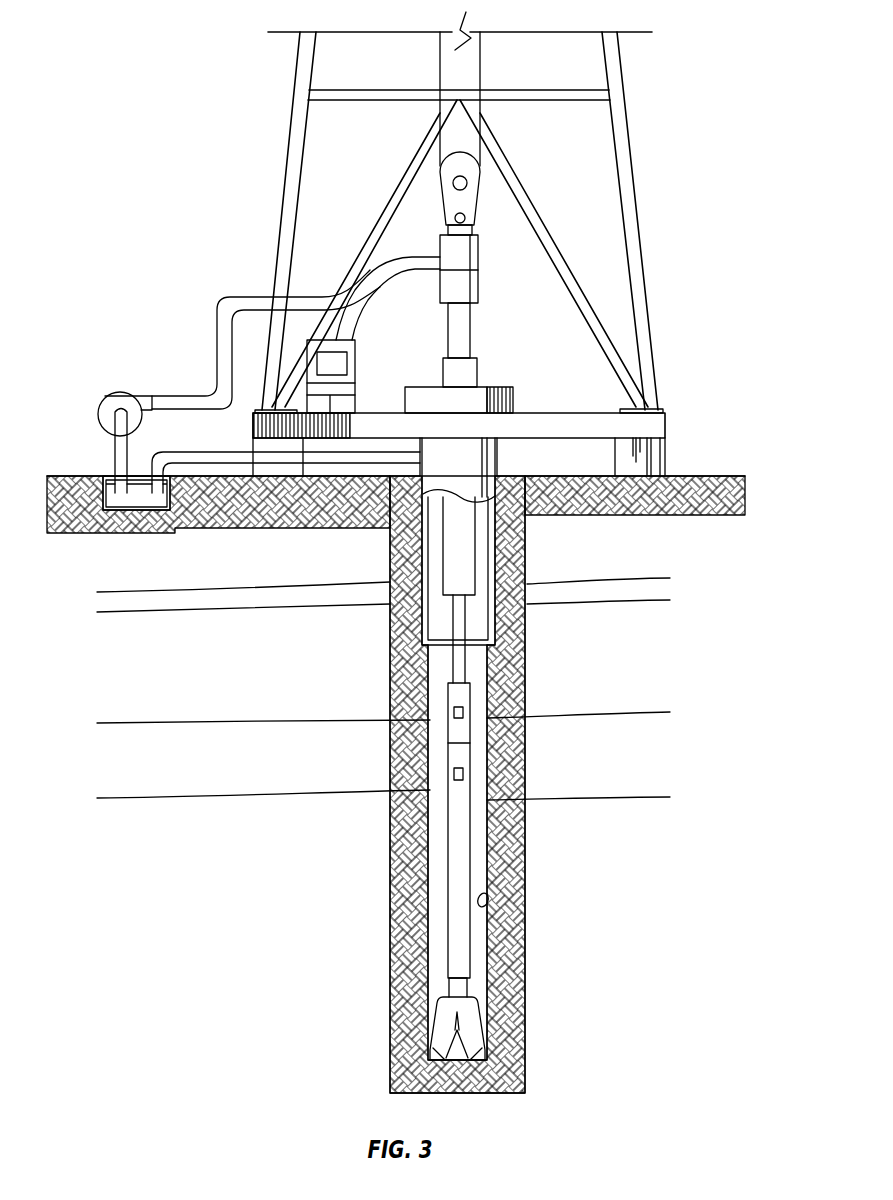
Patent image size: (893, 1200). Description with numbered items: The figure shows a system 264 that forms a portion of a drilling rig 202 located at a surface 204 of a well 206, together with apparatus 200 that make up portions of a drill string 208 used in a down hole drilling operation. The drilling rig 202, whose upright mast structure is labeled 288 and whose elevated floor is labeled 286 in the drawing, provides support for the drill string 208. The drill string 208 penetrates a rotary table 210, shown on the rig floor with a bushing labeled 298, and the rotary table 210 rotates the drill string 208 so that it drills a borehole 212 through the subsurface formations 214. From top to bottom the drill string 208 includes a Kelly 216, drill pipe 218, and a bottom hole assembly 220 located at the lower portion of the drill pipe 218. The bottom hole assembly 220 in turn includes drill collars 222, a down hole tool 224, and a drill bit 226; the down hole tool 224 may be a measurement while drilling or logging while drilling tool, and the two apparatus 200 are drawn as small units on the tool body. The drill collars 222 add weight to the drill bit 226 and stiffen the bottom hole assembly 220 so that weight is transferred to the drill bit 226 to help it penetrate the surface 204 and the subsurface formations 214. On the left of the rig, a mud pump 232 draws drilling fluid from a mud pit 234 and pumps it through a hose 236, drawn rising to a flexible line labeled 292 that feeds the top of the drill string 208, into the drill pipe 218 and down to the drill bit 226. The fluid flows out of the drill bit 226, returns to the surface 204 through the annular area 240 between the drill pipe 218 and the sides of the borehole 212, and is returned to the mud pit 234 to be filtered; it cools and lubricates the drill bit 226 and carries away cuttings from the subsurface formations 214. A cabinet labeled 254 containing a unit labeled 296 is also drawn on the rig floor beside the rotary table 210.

The system 264 is at (195, 184).
The drilling rig 202 is at (648, 256).
The derrick 288 is at (633, 180).
The rig floor 286 is at (668, 425).
The Kelly 216 is at (470, 330).
The kelly bushing 298 is at (477, 372).
The rotary table 210 is at (425, 386).
The mud hose 292 is at (339, 331).
The control unit 254 is at (356, 346).
The processor 296 is at (348, 365).
The hose 236 is at (217, 353).
The mud pump 232 is at (121, 393).
The mud pit 234 is at (133, 508).
The surface 204 is at (697, 477).
The well 206 is at (507, 469).
The subsurface formations 214 is at (88, 572).
The drill pipe 218 is at (496, 645).
The drill collars 222 is at (478, 568).
The bottom hole assembly 220 is at (378, 645).
The annular area 240 is at (460, 672).
The drill string 208 is at (476, 812).
The down hole tool 224 is at (460, 753).
The apparatus 200 is at (464, 712).
The borehole 212 is at (488, 903).
The drill bit 226 is at (458, 1019).